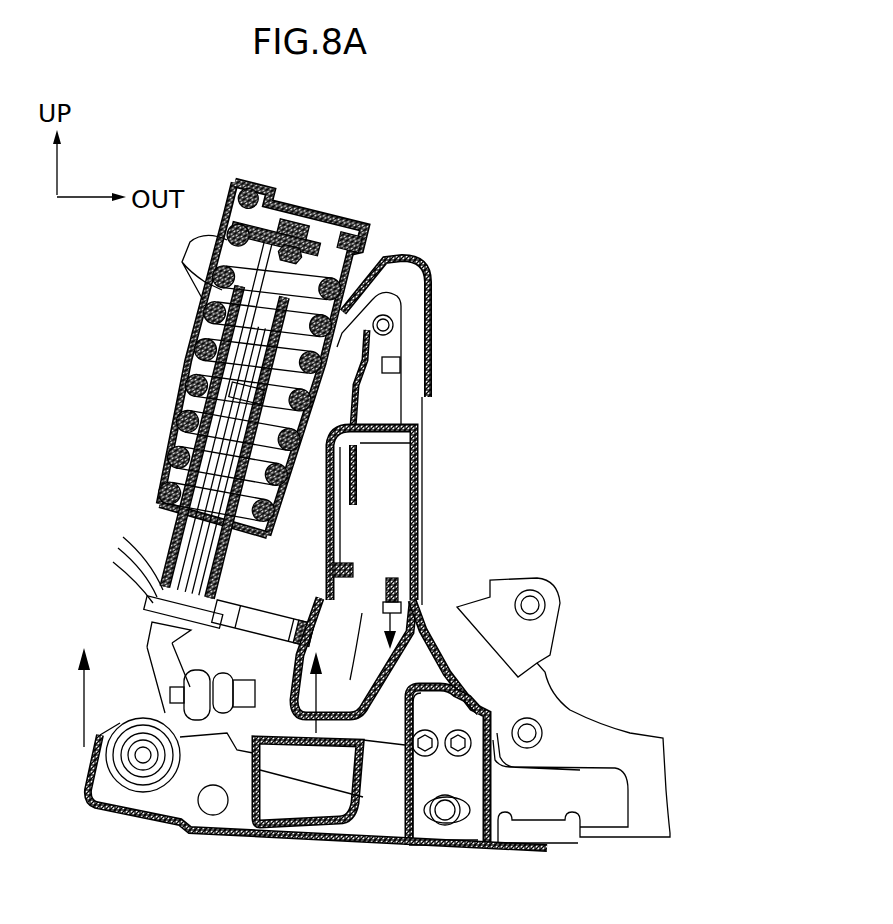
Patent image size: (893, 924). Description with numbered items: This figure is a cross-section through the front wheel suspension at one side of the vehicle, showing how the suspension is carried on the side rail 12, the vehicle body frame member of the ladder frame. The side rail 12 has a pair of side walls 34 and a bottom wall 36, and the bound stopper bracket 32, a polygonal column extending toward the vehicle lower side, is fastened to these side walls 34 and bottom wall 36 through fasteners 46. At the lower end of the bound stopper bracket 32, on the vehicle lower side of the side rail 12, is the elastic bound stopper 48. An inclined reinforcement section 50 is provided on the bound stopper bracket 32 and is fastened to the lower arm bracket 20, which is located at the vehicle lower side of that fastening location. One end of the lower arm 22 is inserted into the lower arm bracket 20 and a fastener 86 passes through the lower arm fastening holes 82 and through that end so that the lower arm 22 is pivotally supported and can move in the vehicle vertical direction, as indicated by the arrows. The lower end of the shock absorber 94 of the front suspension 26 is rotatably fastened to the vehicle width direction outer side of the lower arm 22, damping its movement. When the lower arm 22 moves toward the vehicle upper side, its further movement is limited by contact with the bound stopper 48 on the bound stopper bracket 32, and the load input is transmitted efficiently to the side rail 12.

The side rail 12 is at (422, 504).
The lower arm bracket 20 is at (488, 846).
The lower arm 22 is at (352, 840).
The front suspension 26 is at (172, 389).
The bound stopper bracket 32 is at (288, 677).
The side wall 34 is at (330, 530).
The bottom wall 36 is at (418, 620).
The fastener 46 is at (458, 730).
The bound stopper 48 is at (391, 735).
The inclined reinforcement section 50 is at (437, 658).
The lower arm fastening hole 82 is at (460, 797).
The fastener 86 is at (445, 824).
The shock absorber 94 is at (176, 553).